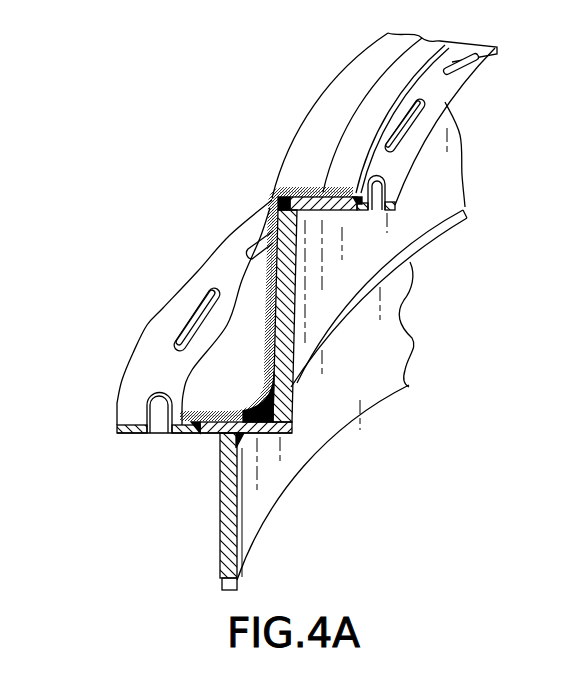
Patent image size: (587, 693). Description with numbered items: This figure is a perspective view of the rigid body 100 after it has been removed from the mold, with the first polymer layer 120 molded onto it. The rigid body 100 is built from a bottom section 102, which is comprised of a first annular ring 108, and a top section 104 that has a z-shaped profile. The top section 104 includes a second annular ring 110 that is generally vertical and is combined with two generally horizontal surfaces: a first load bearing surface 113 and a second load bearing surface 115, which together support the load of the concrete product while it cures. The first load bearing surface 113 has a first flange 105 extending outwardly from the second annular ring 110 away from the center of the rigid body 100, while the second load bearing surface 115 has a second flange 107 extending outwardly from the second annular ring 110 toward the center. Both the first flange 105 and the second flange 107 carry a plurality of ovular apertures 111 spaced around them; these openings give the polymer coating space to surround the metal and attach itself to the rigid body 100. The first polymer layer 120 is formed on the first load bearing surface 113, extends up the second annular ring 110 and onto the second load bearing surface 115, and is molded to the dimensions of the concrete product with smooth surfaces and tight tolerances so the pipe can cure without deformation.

The rigid body 100 is at (117, 401).
The bottom section 102 is at (305, 524).
The top section 104 is at (185, 198).
The first flange 105 is at (165, 310).
The second flange 107 is at (405, 162).
The first annular ring 108 is at (218, 515).
The second annular ring 110 is at (290, 340).
The slot 111 is at (158, 420).
The first load bearing surface 113 is at (282, 427).
The second load bearing surface 115 is at (333, 210).
The first polymer layer 120 is at (200, 377).